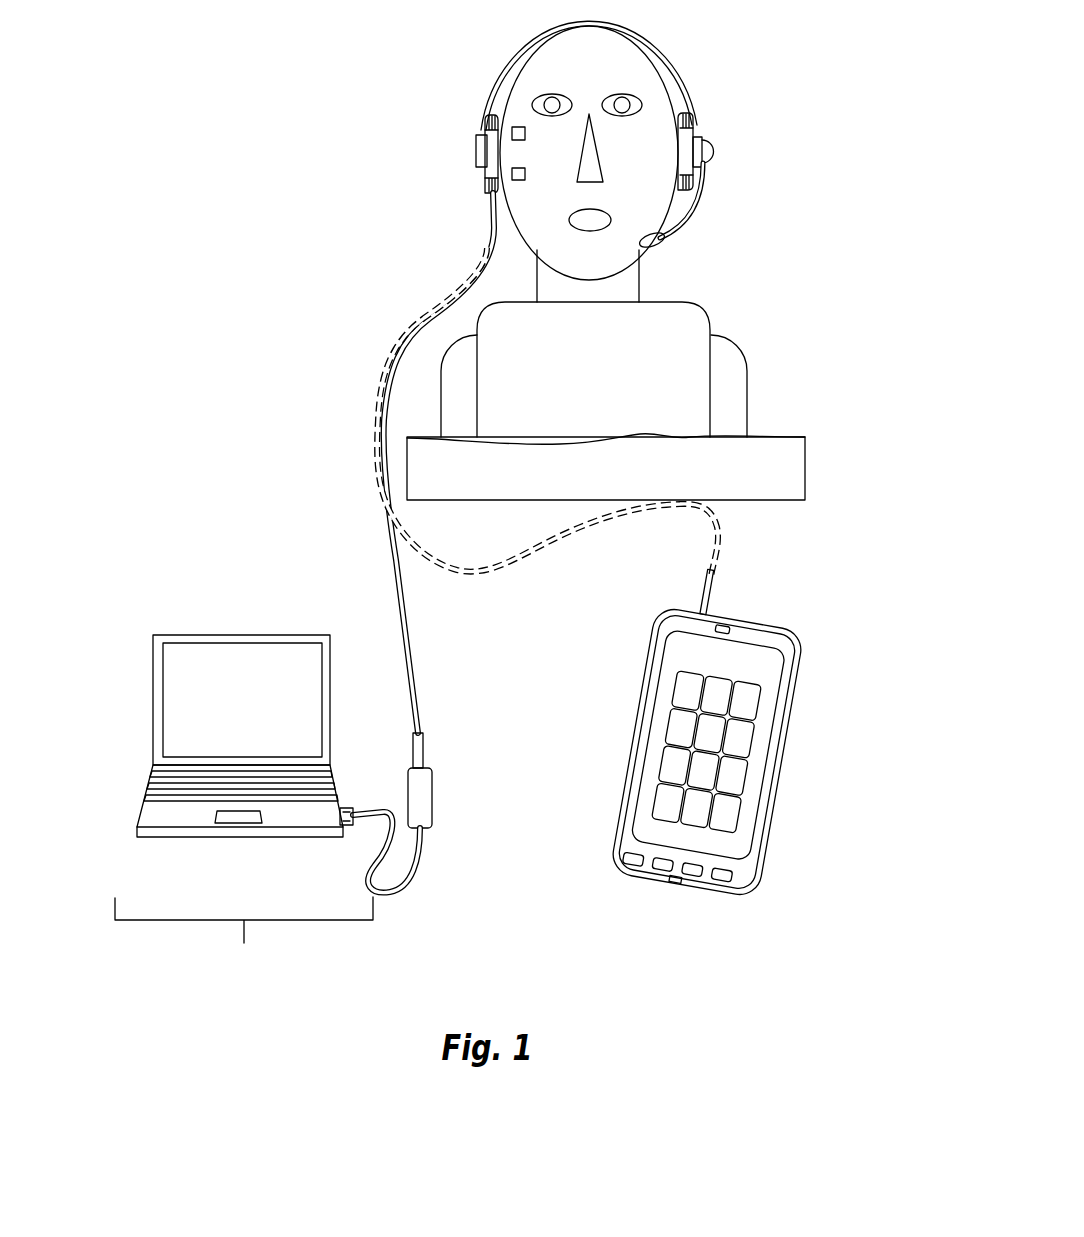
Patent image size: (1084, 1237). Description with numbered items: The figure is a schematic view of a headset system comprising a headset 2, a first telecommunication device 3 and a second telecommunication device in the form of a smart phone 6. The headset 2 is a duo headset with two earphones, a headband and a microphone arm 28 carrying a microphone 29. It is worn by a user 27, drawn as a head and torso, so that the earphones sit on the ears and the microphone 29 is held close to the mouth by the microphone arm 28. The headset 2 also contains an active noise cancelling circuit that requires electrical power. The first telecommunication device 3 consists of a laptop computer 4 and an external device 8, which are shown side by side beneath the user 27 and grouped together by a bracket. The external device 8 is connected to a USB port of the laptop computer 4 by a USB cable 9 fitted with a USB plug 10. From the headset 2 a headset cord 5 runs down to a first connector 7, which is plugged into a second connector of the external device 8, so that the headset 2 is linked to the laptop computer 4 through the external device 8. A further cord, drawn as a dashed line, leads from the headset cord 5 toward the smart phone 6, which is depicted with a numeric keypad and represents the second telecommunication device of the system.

The headset 2 is at (480, 116).
The first telecommunication device 3 is at (244, 946).
The laptop computer 4 is at (213, 668).
The headset cord 5 is at (400, 593).
The smart phone 6 is at (768, 830).
The first connector 7 is at (423, 745).
The external device 8 is at (425, 800).
The USB cable 9 is at (430, 877).
The USB plug 10 is at (347, 803).
The user 27 is at (580, 399).
The microphone arm 28 is at (703, 198).
The microphone 29 is at (660, 245).